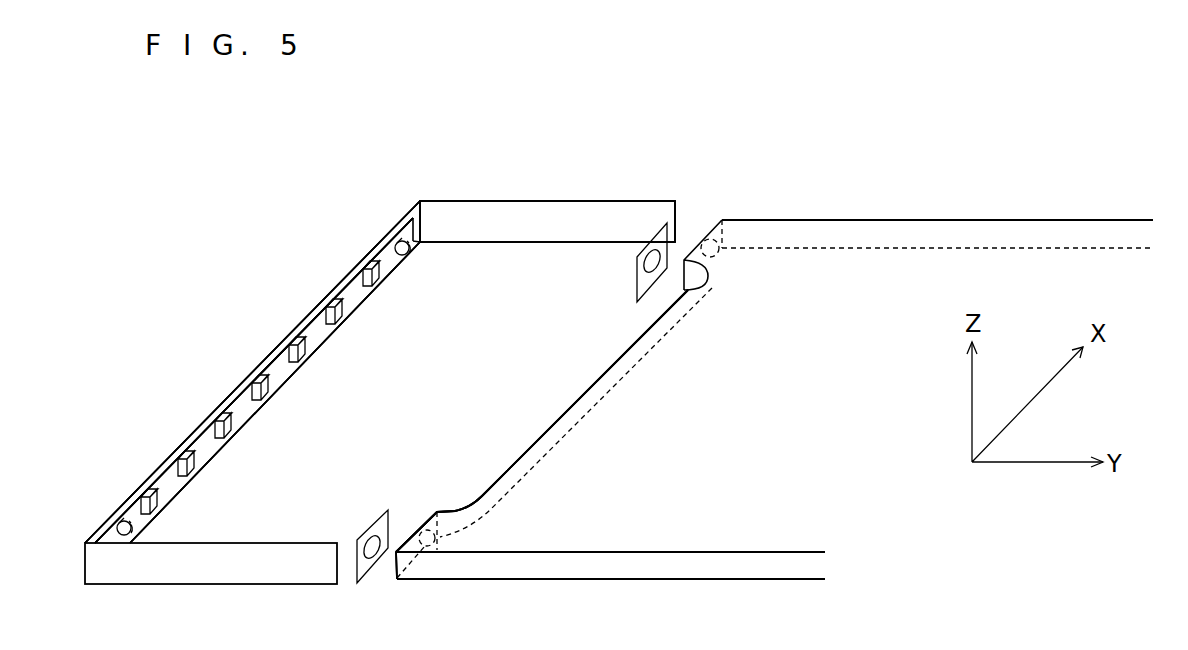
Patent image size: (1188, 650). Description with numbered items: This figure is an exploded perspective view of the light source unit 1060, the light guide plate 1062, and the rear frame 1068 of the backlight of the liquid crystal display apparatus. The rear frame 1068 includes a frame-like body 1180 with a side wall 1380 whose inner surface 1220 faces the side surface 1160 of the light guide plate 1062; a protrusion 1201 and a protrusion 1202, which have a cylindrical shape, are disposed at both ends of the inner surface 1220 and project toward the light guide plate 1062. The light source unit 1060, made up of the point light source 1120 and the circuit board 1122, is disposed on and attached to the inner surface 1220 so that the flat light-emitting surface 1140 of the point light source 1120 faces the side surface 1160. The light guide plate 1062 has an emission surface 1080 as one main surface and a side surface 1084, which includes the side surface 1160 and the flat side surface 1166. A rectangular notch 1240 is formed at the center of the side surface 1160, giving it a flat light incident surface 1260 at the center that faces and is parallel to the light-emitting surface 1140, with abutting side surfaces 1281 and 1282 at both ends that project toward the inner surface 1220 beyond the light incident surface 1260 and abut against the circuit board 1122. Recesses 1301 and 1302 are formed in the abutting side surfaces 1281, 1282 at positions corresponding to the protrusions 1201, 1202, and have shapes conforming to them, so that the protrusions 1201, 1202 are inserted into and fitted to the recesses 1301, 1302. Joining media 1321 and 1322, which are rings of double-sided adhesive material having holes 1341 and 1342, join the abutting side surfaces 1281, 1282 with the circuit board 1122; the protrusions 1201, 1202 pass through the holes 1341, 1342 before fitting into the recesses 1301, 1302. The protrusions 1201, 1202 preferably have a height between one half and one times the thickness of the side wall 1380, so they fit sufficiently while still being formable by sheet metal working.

The light source unit 1060 is at (311, 322).
The light guide plate 1062 is at (1100, 220).
The rear frame 1068 is at (590, 200).
The emission surface 1080 is at (798, 416).
The side surface 1084 is at (764, 568).
The point light source 1120 is at (250, 408).
The circuit board 1122 is at (206, 430).
The light-emitting surface 1140 is at (229, 434).
The side surface 1160 is at (597, 370).
The side surface 1166 is at (694, 568).
The frame-like body 1180 is at (492, 200).
The protrusion 1201 is at (416, 249).
The protrusion 1202 is at (134, 525).
The inner surface 1220 is at (342, 280).
The notch 1240 is at (525, 452).
The light incident surface 1260 is at (562, 406).
The abutting side surface 1281 is at (700, 218).
The abutting side surface 1282 is at (386, 572).
The recess 1301 is at (720, 253).
The recess 1302 is at (440, 540).
The joining medium 1321 is at (634, 284).
The joining medium 1322 is at (392, 518).
The hole 1341 is at (644, 262).
The hole 1342 is at (371, 535).
The side wall 1380 is at (261, 363).